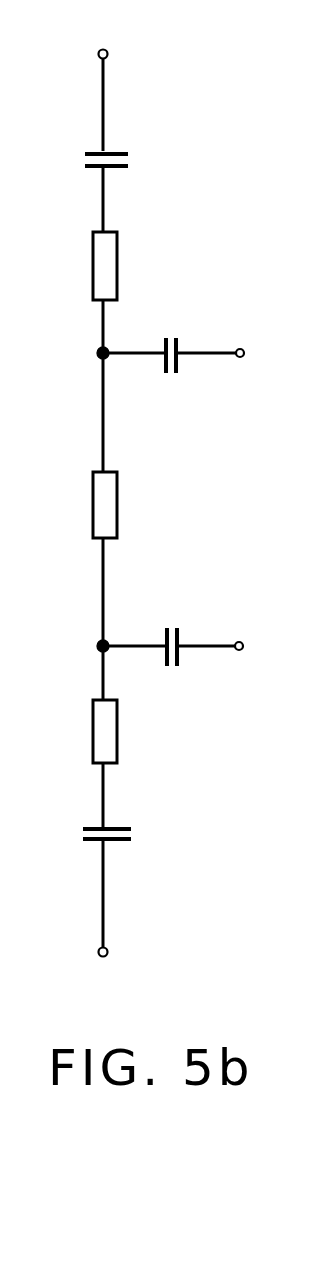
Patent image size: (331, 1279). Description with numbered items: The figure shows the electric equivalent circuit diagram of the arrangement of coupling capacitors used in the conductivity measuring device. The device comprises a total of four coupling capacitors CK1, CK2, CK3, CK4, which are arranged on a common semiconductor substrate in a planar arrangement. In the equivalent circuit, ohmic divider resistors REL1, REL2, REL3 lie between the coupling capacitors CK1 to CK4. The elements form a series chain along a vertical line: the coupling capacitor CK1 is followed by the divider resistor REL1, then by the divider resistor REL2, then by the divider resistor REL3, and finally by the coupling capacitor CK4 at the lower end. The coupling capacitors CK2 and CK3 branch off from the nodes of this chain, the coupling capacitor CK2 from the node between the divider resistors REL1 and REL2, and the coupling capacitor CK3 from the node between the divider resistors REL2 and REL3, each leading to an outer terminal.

The coupling capacitor CK1 is at (137, 166).
The ohmic divider resistor REL1 is at (144, 266).
The coupling capacitor CK2 is at (173, 379).
The ohmic divider resistor REL2 is at (143, 505).
The coupling capacitor CK3 is at (173, 667).
The ohmic divider resistor REL3 is at (141, 731).
The coupling capacitor CK4 is at (138, 840).